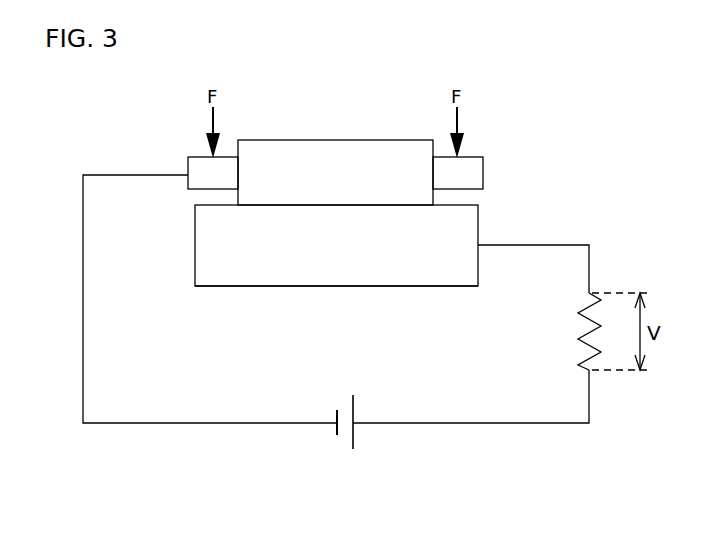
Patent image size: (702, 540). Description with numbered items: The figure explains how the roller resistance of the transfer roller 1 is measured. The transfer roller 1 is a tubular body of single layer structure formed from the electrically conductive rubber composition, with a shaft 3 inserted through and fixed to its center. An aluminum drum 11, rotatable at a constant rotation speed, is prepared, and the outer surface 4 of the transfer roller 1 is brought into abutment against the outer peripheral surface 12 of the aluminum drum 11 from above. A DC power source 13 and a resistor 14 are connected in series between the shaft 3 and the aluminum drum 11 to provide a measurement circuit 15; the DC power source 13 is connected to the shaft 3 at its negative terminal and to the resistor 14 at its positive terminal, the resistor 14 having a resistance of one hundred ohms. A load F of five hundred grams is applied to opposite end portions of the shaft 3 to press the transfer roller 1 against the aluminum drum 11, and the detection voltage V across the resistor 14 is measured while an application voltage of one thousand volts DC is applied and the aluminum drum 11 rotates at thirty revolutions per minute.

The transfer roller 1 is at (412, 79).
The shaft 3 is at (473, 172).
The outer surface 4 is at (335, 150).
The aluminum drum 11 is at (300, 286).
The outer peripheral surface 12 is at (375, 263).
The DC power source 13 is at (343, 446).
The resistor 14 is at (578, 333).
The measurement circuit 15 is at (155, 423).